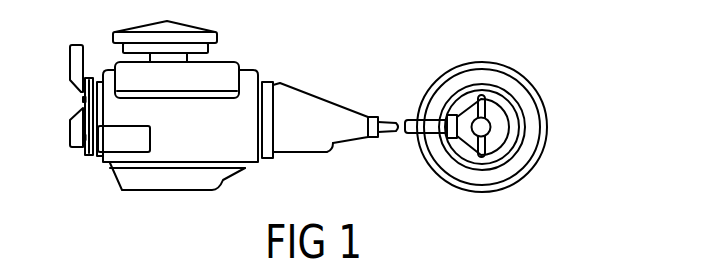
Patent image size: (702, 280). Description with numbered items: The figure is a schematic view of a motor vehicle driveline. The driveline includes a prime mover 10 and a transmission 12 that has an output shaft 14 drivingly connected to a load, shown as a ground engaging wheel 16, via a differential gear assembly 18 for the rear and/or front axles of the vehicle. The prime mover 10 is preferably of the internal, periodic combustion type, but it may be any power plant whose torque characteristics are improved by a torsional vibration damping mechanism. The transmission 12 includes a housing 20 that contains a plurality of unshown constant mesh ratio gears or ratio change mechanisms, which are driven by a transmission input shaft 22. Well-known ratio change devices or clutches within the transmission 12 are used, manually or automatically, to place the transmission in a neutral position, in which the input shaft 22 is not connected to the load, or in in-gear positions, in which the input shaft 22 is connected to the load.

The prime mover 10 is at (122, 190).
The transmission 12 is at (313, 81).
The output shaft 14 is at (391, 137).
The ground engaging wheel 16 is at (535, 88).
The differential gear assembly 18 is at (503, 142).
The housing 20 is at (293, 153).
The transmission input shaft 22 is at (128, 276).